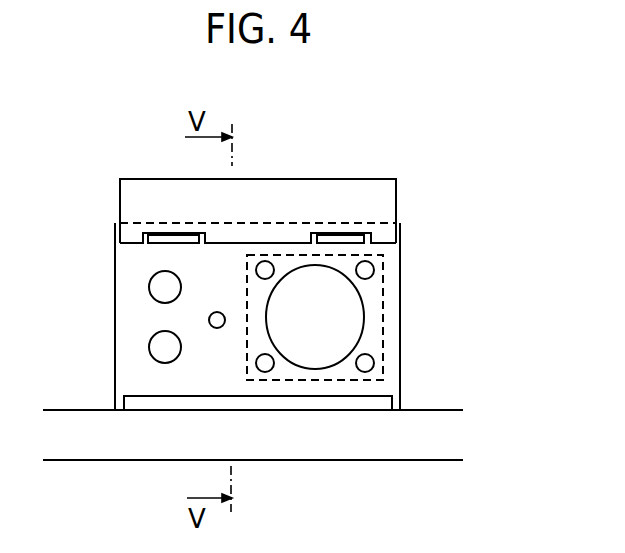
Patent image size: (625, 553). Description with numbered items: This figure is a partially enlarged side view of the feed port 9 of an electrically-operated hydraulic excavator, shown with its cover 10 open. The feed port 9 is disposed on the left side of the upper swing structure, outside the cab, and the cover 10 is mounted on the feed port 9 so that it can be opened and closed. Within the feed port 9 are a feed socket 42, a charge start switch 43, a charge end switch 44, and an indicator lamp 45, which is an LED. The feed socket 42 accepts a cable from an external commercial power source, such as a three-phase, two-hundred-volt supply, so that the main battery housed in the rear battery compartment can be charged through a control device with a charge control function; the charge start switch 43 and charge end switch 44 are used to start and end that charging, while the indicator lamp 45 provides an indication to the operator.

The feed port 9 is at (191, 254).
The cover 10 is at (280, 192).
The feed socket 42 is at (337, 320).
The charge start switch 43 is at (170, 285).
The charge end switch 44 is at (170, 347).
The indicator lamp (LED) 45 is at (220, 320).